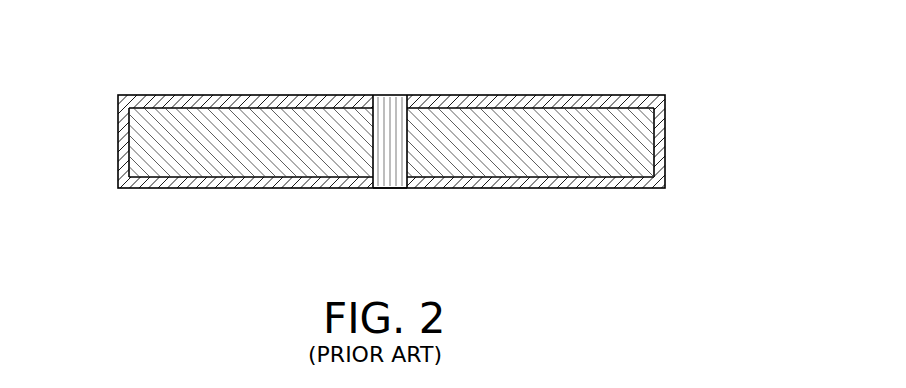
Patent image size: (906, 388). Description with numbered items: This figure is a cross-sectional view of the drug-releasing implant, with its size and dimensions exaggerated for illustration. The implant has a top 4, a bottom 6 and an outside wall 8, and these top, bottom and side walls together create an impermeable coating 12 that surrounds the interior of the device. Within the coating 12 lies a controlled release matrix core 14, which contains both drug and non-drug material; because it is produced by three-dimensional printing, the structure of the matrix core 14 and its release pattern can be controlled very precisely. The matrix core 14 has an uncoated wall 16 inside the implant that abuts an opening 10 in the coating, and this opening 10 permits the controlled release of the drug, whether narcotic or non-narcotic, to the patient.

The top 4 is at (598, 90).
The bottom 6 is at (564, 196).
The outside wall 8 is at (665, 160).
The opening 10 is at (397, 206).
The impermeable coating 12 is at (273, 105).
The controlled release matrix core 14 is at (152, 133).
The uncoated wall 16 is at (375, 138).